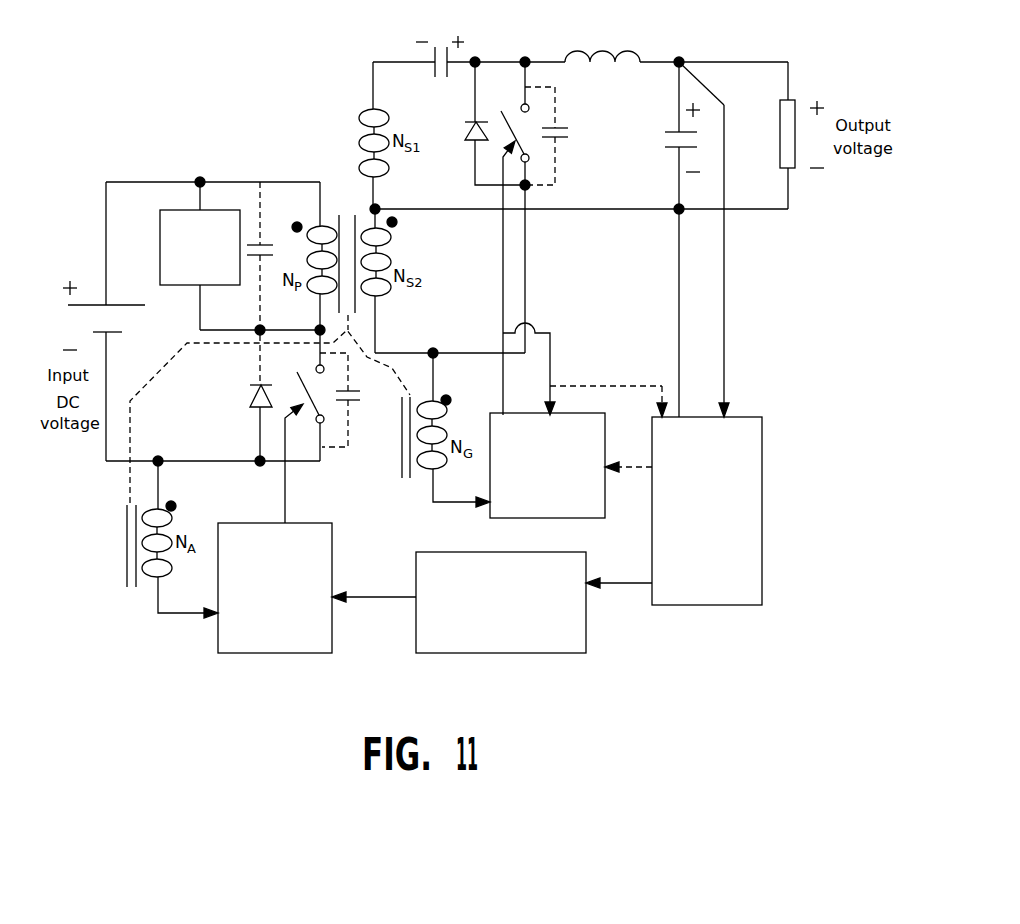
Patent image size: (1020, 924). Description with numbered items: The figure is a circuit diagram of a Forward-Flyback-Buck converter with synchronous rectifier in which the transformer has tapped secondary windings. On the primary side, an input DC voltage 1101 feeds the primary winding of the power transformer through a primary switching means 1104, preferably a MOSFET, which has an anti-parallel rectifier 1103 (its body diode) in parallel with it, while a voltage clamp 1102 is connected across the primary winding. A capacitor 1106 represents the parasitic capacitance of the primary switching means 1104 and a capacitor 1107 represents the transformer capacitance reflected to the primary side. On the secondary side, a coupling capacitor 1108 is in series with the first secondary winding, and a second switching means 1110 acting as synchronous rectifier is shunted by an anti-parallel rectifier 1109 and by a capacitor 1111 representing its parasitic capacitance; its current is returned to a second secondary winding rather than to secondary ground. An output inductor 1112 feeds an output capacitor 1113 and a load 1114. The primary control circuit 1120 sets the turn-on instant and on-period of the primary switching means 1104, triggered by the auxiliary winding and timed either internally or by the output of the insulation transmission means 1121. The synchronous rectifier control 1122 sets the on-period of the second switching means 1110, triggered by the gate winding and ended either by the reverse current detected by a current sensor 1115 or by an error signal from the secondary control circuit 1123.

The input DC voltage 1101 is at (100, 305).
The voltage clamp 1102 is at (217, 210).
The anti-parallel rectifier 1103 is at (250, 396).
The primary switching means 1104 is at (322, 425).
The capacitor 1106 is at (258, 257).
The capacitor 1107 is at (360, 398).
The coupling capacitor 1108 is at (461, 52).
The anti-parallel rectifier 1109 is at (468, 135).
The second switching means 1110 is at (528, 132).
The capacitor 1111 is at (560, 144).
The output inductor 1112 is at (638, 52).
The output capacitor 1113 is at (675, 146).
The load 1114 is at (795, 165).
The current sensor 1115 is at (503, 333).
The primary control circuit 1120 is at (290, 653).
The insulation transmission means 1121 is at (490, 653).
The synchronous rectifier control 1122 is at (605, 500).
The secondary control circuit 1123 is at (711, 605).